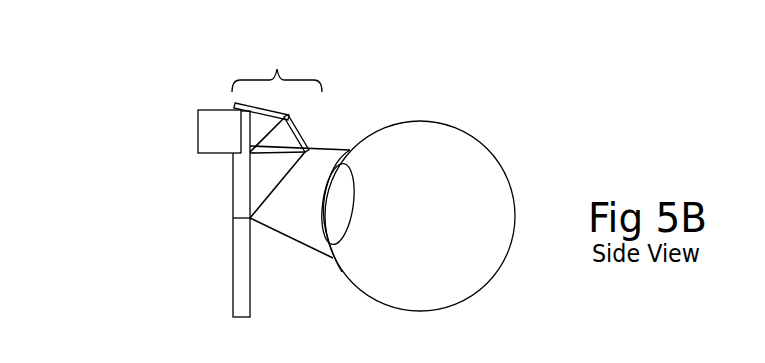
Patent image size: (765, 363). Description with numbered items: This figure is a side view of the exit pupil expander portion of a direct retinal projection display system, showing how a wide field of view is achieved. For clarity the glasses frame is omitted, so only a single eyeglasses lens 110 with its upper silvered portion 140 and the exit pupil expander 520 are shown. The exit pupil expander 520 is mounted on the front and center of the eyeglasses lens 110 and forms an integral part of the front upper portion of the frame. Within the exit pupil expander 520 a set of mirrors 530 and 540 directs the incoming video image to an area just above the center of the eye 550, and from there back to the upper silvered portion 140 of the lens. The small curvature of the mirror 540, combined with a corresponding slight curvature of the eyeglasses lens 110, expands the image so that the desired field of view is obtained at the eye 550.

The eyeglasses lens 110 is at (223, 268).
The silvered portion 140 is at (218, 185).
The exit pupil expander 520 is at (364, 93).
The mirror 530 is at (284, 104).
The mirror 540 is at (312, 129).
The eye 550 is at (508, 273).